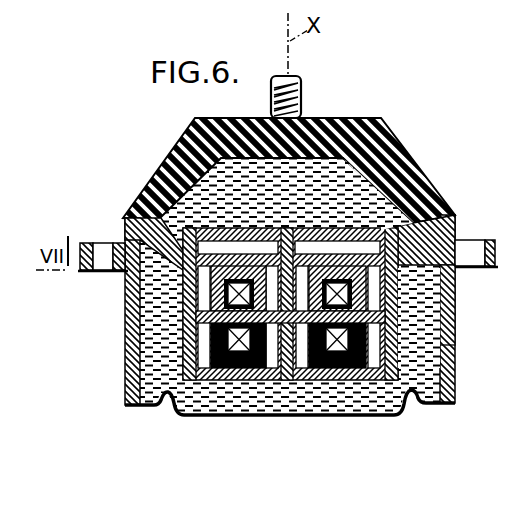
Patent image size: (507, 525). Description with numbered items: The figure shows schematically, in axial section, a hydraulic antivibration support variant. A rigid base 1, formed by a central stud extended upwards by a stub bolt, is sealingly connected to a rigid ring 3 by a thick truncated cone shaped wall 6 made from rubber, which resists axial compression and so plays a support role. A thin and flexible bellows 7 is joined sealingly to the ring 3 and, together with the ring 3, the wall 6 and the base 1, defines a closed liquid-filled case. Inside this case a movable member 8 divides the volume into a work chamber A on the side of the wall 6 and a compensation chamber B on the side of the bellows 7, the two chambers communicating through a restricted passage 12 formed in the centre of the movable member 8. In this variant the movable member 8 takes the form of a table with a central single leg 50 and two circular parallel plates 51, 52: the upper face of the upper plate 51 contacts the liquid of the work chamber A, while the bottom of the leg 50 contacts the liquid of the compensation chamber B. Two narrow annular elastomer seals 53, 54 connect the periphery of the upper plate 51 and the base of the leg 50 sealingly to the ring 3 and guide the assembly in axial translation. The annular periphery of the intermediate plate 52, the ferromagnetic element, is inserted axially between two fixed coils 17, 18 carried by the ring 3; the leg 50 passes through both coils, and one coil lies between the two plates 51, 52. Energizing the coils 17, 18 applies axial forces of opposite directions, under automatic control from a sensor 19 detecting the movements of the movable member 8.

The rigid base 1 is at (292, 128).
The thick truncated cone shaped wall 6 is at (177, 147).
The movable member 8 is at (150, 177).
The restricted passage 12 is at (118, 266).
The rigid ring 3 is at (440, 378).
The thin and flexible bellows 7 is at (371, 408).
The annular elastomer seal 53 is at (398, 221).
The intermediate plate 52 is at (390, 320).
The central single leg 50 is at (277, 366).
The annular elastomer seal 54 is at (301, 366).
The coil 17 is at (405, 352).
The coil 18 is at (426, 279).
The sensor 19 is at (388, 297).
The upper plate 51 is at (378, 168).
The work chamber A is at (388, 125).
The compensation chamber B is at (150, 363).